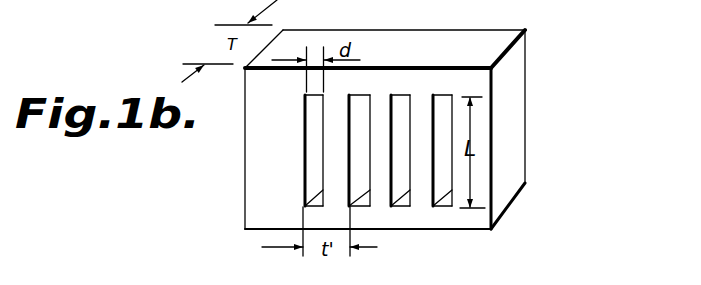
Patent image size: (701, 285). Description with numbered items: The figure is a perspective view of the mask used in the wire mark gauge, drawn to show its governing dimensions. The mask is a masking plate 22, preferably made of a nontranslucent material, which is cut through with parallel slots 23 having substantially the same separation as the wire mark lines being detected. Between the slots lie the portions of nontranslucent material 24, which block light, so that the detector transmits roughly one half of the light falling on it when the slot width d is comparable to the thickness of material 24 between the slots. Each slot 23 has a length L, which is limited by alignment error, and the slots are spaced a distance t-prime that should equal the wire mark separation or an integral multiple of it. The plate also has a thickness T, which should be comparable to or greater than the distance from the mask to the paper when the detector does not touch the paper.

The masking plate 22 is at (530, 106).
The slots 23 is at (320, 108).
The nontranslucent material 24 is at (340, 203).